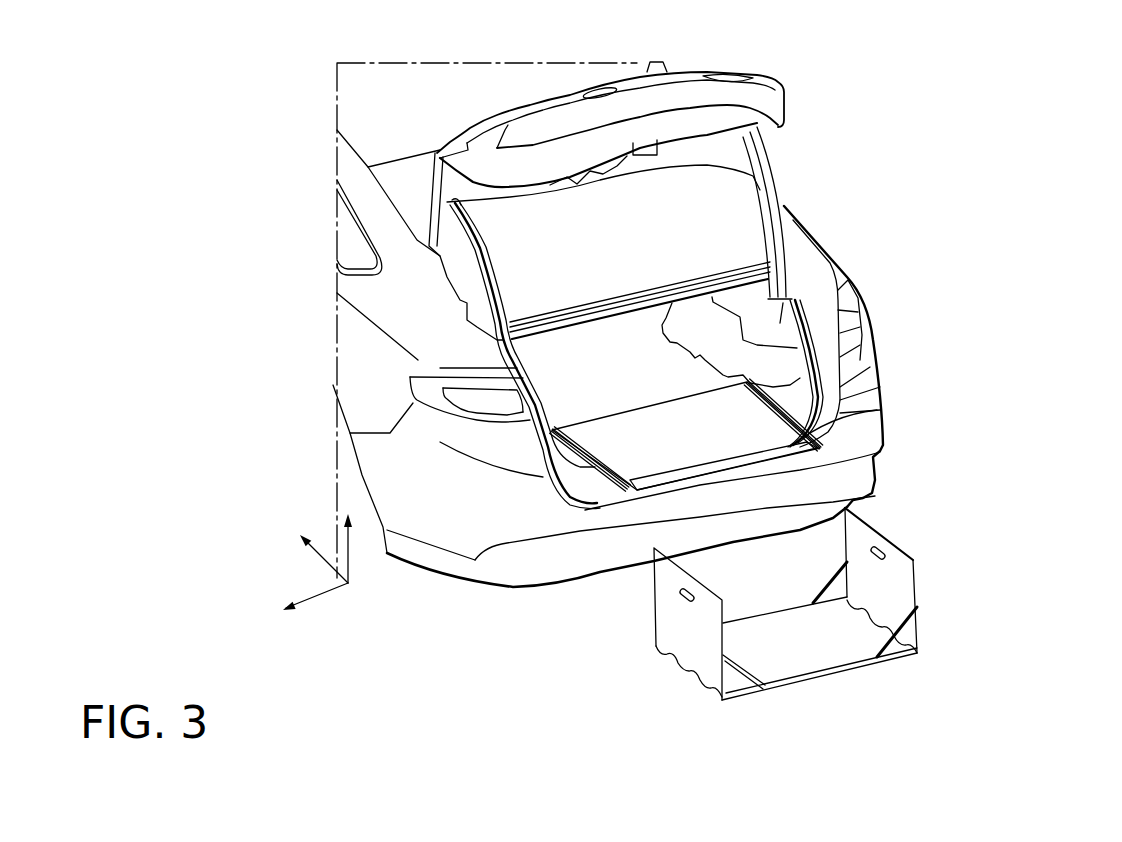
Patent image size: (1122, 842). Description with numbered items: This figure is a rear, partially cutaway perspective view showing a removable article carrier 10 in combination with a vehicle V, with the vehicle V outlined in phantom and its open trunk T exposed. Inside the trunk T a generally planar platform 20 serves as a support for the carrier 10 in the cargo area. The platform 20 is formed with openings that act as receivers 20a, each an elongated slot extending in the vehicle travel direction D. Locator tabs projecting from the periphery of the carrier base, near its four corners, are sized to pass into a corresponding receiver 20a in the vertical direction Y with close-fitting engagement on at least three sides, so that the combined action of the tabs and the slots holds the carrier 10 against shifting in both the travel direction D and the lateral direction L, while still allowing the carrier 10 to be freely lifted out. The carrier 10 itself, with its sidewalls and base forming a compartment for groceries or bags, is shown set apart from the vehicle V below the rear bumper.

The removable article carrier 10 is at (879, 694).
The platform 20 is at (697, 432).
The receiver 20a is at (825, 420).
The trunk T is at (836, 221).
The vehicle V is at (338, 381).
The vehicle travel direction D is at (325, 562).
The vertical direction Y is at (350, 553).
The lateral direction L is at (321, 597).